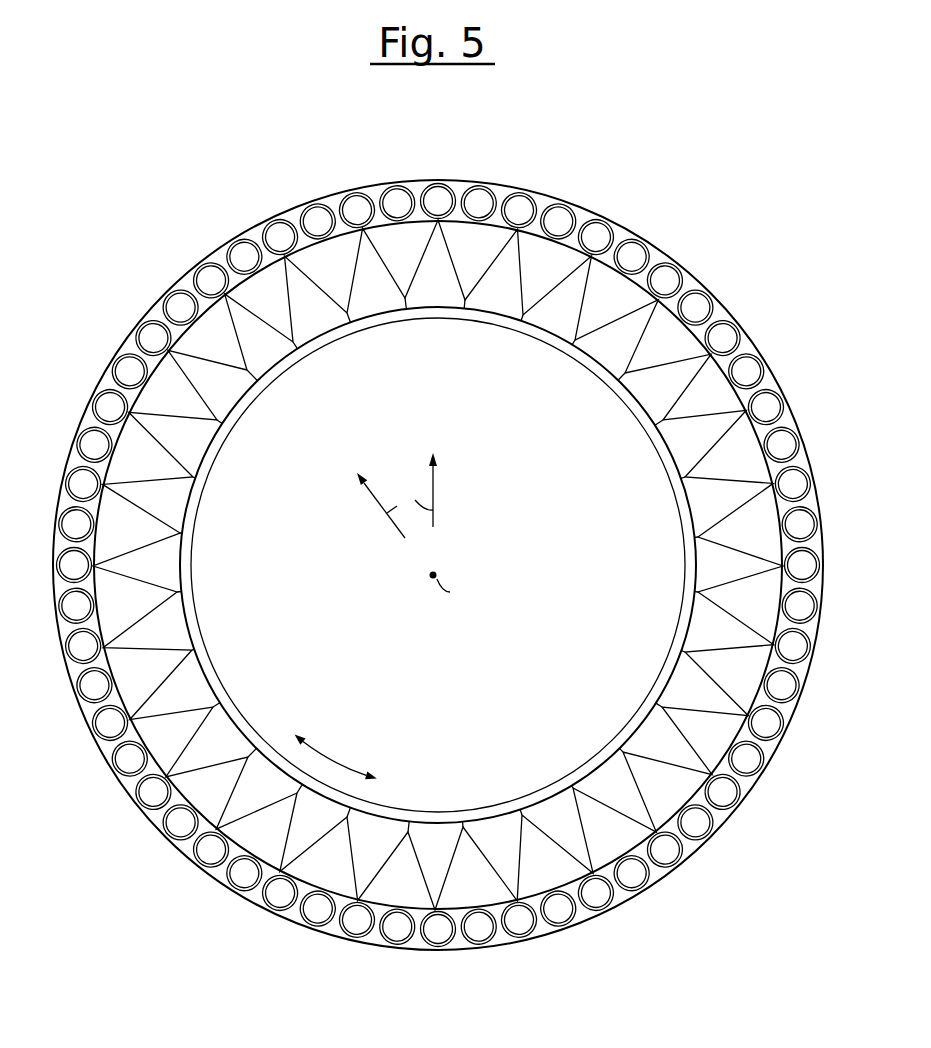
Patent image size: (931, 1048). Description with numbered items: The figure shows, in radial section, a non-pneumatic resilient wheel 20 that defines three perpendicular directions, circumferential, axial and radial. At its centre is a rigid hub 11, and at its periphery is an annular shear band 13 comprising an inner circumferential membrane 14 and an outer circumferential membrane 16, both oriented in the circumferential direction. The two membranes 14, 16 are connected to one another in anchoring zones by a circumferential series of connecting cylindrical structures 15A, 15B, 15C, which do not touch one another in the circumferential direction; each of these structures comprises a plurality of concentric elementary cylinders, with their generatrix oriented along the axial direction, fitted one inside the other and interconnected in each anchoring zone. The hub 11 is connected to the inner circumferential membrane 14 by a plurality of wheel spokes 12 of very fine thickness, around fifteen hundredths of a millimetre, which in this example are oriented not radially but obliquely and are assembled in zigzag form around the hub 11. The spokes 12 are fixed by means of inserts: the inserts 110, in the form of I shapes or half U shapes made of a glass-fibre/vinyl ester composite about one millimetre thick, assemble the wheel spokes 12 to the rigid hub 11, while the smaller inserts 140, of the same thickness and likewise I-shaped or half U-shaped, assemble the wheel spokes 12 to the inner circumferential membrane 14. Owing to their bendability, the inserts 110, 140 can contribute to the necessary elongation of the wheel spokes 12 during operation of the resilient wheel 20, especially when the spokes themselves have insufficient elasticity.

The hub 11 is at (183, 541).
The wheel spokes 12 is at (512, 277).
The shear band 13 is at (157, 316).
The inner circumferential membrane 14 is at (232, 283).
The connecting cylindrical structure 15A is at (462, 188).
The connecting cylindrical structure 15B is at (540, 200).
The connecting cylindrical structure 15C is at (582, 213).
The outer circumferential membrane 16 is at (217, 252).
The wheel 20 is at (691, 234).
The inserts 110 is at (627, 388).
The inserts 140 is at (773, 488).